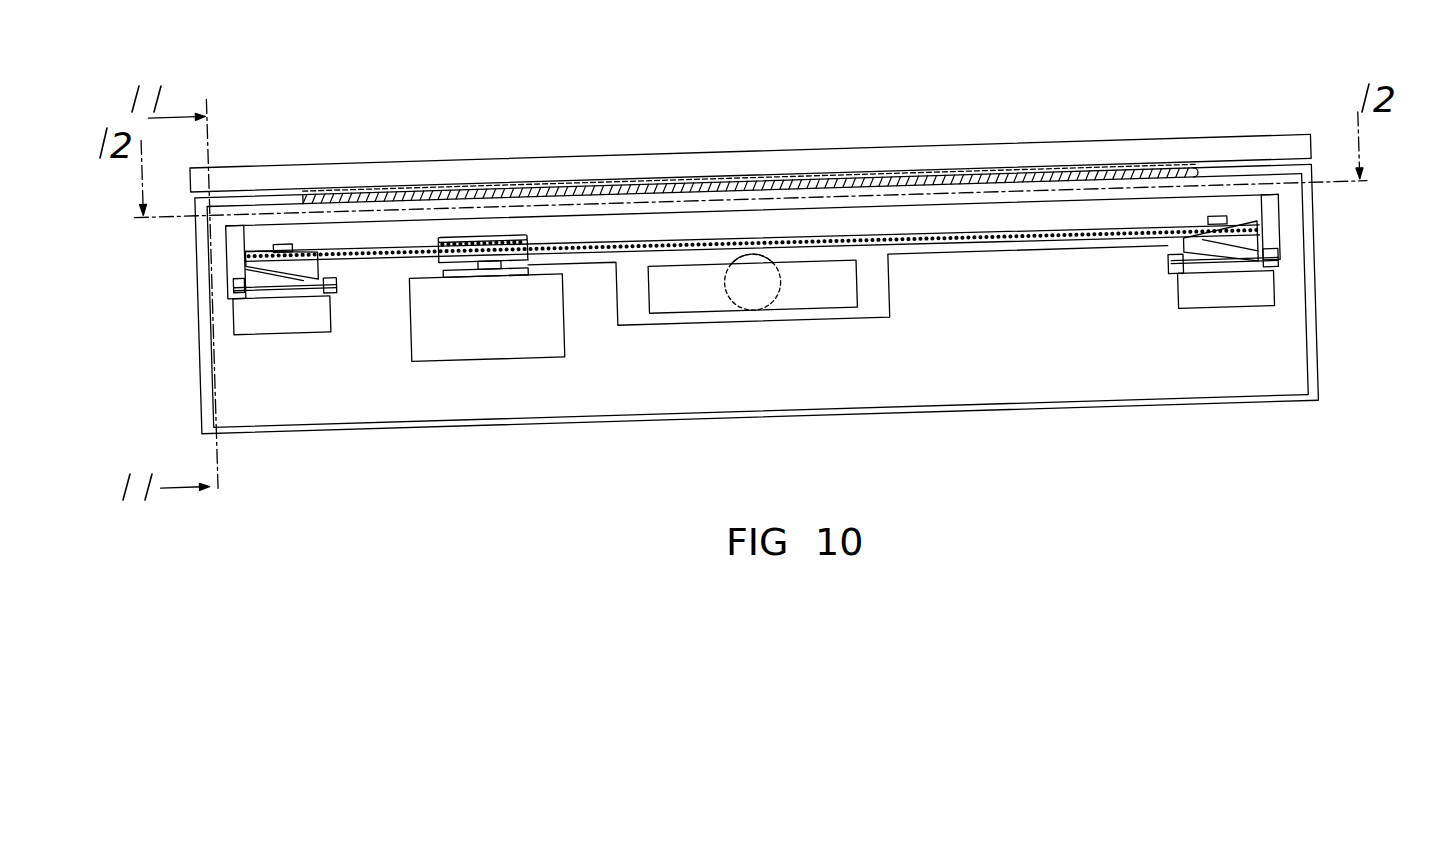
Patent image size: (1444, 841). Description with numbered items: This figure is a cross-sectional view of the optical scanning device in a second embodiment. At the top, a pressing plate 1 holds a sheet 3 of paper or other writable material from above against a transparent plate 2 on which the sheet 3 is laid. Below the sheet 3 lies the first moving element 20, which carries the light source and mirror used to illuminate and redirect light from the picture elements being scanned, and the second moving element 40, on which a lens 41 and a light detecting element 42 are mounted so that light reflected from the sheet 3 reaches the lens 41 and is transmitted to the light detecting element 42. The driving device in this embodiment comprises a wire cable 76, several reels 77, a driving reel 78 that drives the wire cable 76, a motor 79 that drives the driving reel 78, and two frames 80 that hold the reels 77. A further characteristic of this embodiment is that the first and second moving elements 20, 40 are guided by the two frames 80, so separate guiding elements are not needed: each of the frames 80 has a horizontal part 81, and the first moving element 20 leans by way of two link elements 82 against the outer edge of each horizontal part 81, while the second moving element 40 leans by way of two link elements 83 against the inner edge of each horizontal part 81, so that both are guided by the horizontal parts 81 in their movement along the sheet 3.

The pressing plate 1 is at (980, 157).
The transparent plate 2 is at (895, 173).
The sheet 3 is at (930, 173).
The first moving element 20 is at (390, 233).
The second moving element 40 is at (877, 283).
The lens 41 is at (742, 290).
The light detecting element 42 is at (825, 293).
The wire cable 76 is at (1057, 232).
The reels 77 is at (257, 253).
The driving reel 78 is at (483, 235).
The motor 79 is at (532, 338).
The frames 80 is at (300, 318).
The horizontal part 81 is at (262, 287).
The link elements 82 is at (233, 273).
The link elements 83 is at (337, 296).